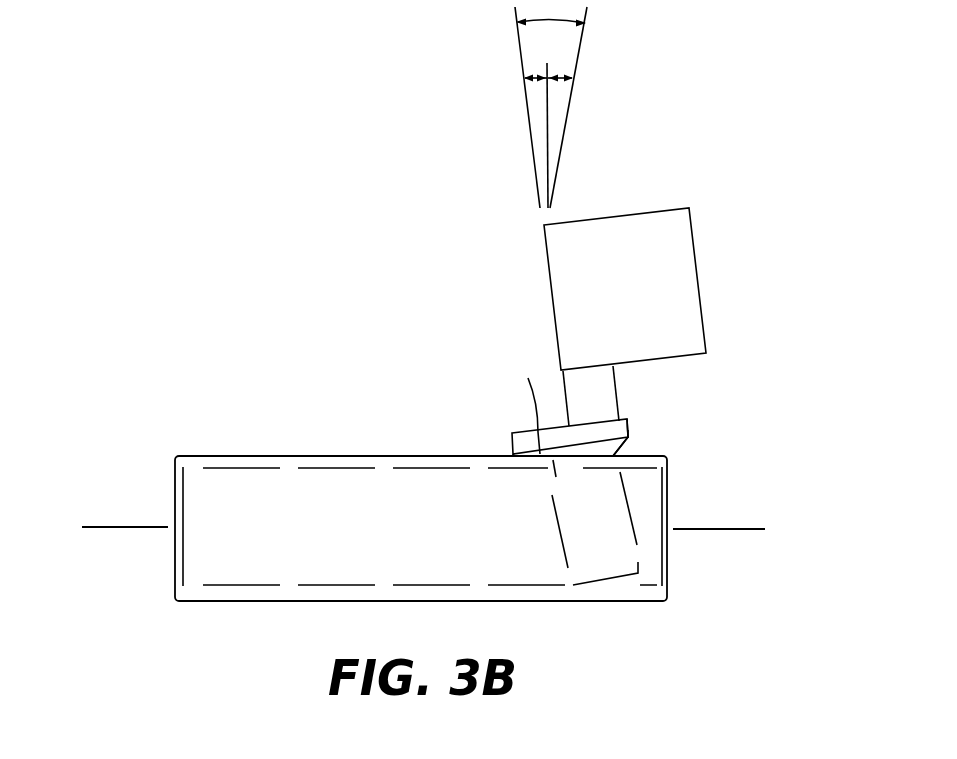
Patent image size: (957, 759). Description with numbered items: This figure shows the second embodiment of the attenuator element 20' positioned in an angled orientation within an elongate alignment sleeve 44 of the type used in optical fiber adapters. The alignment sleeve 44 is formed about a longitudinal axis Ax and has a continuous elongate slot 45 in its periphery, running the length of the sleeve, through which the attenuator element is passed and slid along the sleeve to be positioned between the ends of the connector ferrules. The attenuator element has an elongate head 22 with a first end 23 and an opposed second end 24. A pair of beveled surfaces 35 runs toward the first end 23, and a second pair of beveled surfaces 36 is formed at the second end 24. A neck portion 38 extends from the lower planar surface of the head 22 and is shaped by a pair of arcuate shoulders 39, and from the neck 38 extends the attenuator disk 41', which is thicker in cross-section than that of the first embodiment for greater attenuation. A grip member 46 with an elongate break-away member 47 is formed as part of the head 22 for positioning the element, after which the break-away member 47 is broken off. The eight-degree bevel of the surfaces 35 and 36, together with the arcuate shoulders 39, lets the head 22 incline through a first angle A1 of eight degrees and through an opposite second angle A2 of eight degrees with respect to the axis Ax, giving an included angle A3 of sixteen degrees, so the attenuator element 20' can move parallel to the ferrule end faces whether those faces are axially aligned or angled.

The attenuator element 20' is at (744, 331).
The elongate head 22 is at (512, 439).
The first end 23 is at (512, 449).
The second end 24 is at (629, 436).
The beveled surfaces 35 is at (527, 402).
The second beveled surfaces 36 is at (628, 422).
The neck portion 38 is at (520, 455).
The arcuate shoulders 39 is at (615, 456).
The attenuator disk 41' is at (595, 528).
The alignment sleeve 44 is at (369, 534).
The elongate slot 45 is at (262, 460).
The grip member 46 is at (639, 302).
The break-away member 47 is at (602, 410).
The first angle A1 is at (535, 82).
The second angle A2 is at (560, 82).
The included angle A3 is at (551, 23).
The longitudinal axis Ax is at (103, 529).